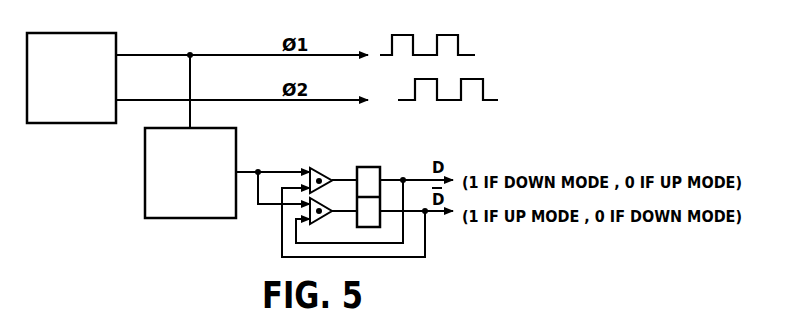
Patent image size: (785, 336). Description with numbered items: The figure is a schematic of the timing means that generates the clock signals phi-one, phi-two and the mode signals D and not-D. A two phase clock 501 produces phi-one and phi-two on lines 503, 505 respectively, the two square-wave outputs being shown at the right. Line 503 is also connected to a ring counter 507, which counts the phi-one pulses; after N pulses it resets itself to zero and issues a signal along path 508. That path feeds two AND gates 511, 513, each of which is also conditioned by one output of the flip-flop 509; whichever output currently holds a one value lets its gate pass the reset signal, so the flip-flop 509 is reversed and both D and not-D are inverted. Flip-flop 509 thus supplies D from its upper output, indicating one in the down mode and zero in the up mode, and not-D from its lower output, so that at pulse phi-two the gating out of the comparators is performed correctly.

The two phase clock 501 is at (60, 33).
The line 503 is at (140, 55).
The line 505 is at (175, 100).
The ring counter 507 is at (174, 208).
The path 508 is at (248, 177).
The flip-flop 509 is at (366, 167).
The AND gate 511 is at (325, 168).
The AND gate 513 is at (317, 223).